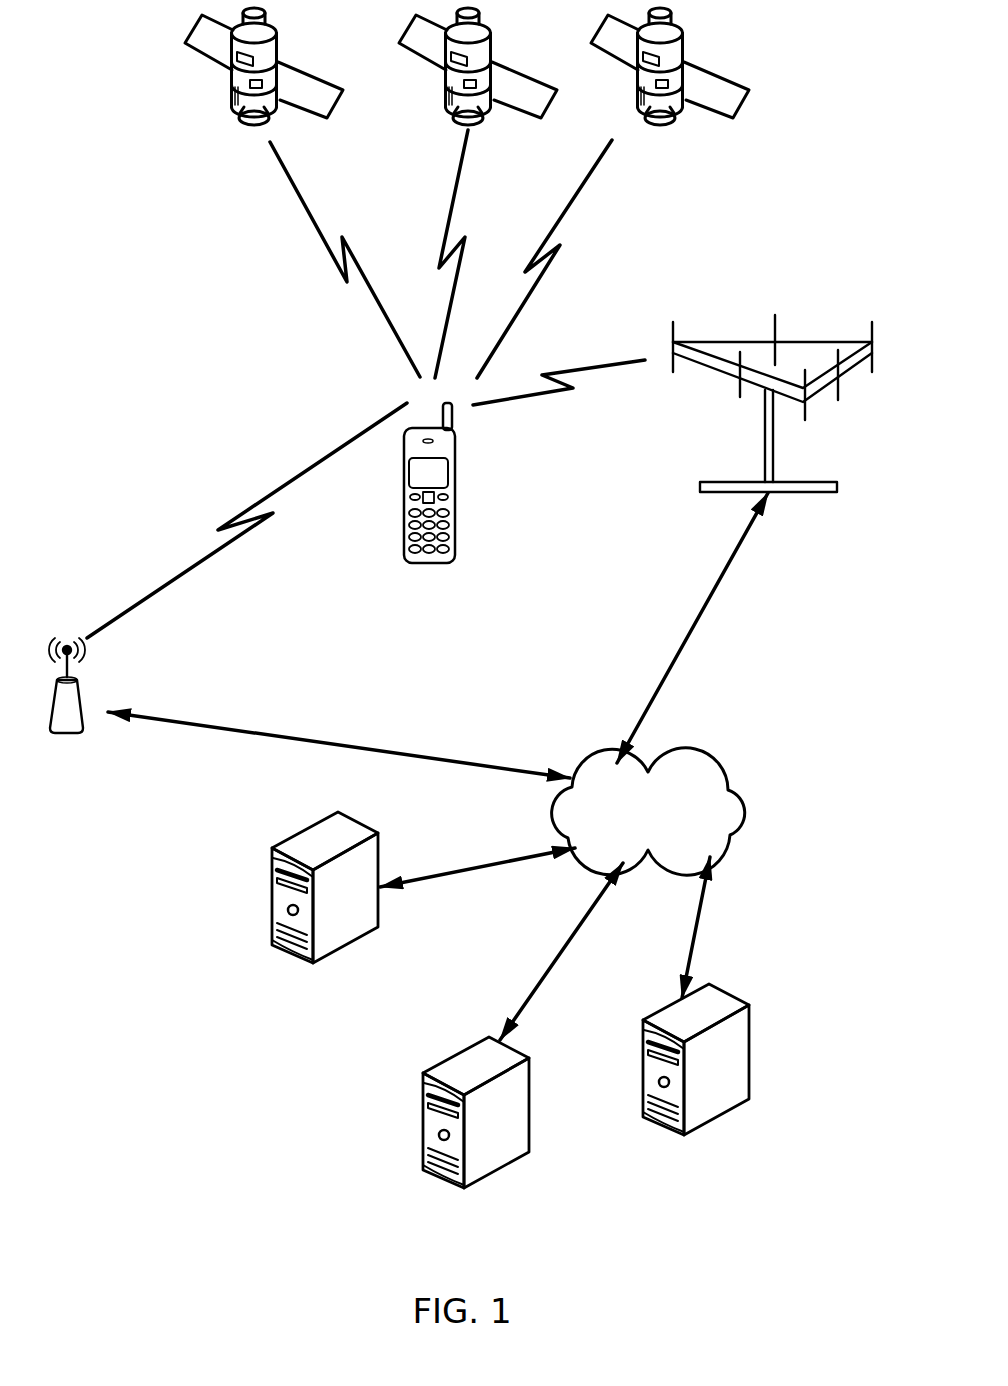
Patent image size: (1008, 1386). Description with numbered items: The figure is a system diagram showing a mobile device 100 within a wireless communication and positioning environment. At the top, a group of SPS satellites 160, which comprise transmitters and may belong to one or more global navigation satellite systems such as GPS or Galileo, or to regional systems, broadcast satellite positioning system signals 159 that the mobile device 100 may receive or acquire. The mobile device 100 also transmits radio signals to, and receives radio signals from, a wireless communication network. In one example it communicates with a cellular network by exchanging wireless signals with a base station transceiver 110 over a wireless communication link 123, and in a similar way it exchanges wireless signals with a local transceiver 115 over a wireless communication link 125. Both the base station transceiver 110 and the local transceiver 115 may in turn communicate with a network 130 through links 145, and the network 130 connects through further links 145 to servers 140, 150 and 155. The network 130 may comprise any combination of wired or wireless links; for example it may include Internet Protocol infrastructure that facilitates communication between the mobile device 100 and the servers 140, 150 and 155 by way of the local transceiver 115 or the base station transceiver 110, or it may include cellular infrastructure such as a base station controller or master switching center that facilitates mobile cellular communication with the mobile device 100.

The mobile device 100 is at (404, 495).
The base station transceiver 110 is at (807, 493).
The local transceiver 115 is at (68, 737).
The wireless communication link 123 is at (527, 398).
The wireless communication link 125 is at (167, 590).
The network 130 is at (742, 785).
The server 140 is at (358, 818).
The links 145 is at (285, 738).
The server 150 is at (747, 1010).
The server 155 is at (530, 1060).
The satellite positioning system signals 159 is at (303, 192).
The SPS satellites 160 is at (152, 78).